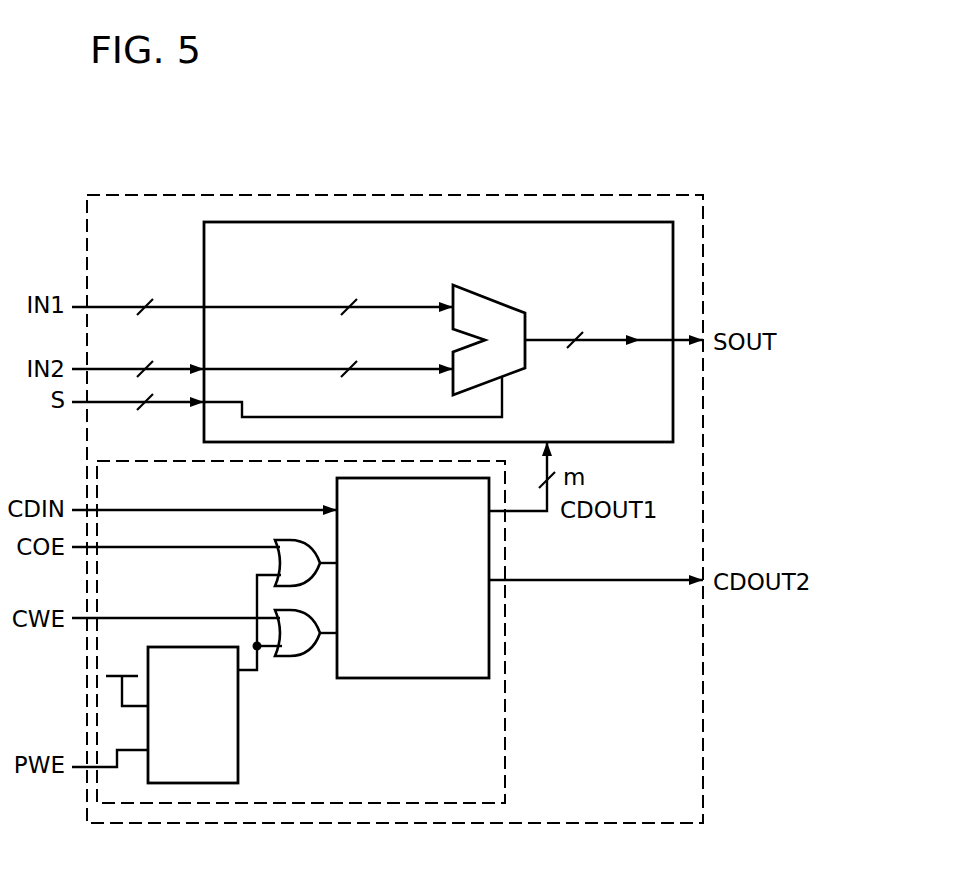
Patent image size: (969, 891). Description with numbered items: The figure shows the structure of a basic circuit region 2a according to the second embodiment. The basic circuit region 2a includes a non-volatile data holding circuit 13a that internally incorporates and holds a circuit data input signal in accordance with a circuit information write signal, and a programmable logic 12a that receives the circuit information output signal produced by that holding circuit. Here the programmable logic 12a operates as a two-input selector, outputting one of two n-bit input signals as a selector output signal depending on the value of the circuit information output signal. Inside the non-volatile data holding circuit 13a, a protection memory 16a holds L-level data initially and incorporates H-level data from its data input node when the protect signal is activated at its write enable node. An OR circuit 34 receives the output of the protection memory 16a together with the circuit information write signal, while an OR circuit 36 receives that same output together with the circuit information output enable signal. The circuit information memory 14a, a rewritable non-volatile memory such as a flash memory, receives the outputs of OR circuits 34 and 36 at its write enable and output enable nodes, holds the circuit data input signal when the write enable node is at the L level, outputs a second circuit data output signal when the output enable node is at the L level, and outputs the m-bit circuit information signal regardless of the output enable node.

The basic circuit region 2a is at (620, 196).
The programmable logic 12a is at (427, 221).
The non-volatile data holding circuit 13a is at (476, 803).
The circuit information memory 14a is at (489, 652).
The protection memory 16a is at (238, 768).
The OR circuit 34 is at (293, 655).
The OR circuit 36 is at (278, 540).